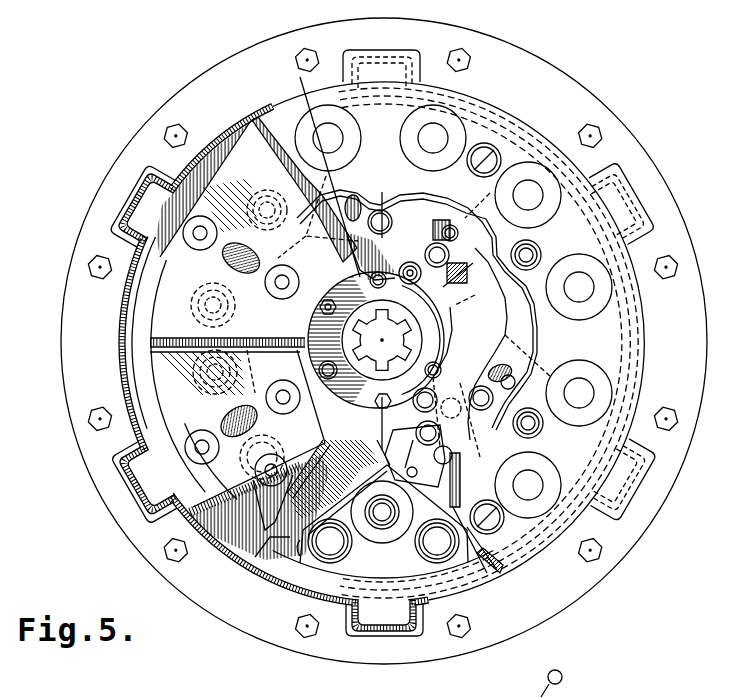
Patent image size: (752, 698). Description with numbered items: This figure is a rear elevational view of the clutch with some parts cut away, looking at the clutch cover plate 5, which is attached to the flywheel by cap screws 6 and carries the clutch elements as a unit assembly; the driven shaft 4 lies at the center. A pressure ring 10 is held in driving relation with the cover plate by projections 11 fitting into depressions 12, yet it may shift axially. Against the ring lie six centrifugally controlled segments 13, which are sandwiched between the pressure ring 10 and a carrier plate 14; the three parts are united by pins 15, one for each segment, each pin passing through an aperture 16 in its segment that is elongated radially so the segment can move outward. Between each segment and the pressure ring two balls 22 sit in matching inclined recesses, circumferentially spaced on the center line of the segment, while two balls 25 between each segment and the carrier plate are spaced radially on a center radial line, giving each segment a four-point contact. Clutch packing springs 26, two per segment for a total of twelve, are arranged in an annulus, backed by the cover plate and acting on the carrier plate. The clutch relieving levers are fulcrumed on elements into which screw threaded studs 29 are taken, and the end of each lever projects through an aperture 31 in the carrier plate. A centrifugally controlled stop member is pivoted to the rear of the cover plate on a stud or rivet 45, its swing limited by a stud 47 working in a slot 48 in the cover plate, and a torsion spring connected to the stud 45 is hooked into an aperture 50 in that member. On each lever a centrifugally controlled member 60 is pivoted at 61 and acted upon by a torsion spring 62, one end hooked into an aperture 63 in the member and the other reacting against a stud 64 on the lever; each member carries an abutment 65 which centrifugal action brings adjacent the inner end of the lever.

The driven shaft 4 is at (380, 360).
The clutch cover plate 5 is at (499, 100).
The cap screws 6 is at (670, 266).
The pressure ring 10 is at (140, 297).
The projections 11 is at (150, 200).
The depressions 12 is at (150, 182).
The segments 13 is at (240, 170).
The carrier plate 14 is at (297, 557).
The pins 15 is at (225, 420).
The aperture 16 is at (233, 274).
The ball 22 is at (255, 557).
The balls 25 is at (197, 447).
The clutch packing springs 26 is at (320, 560).
The screw threaded stud 29 is at (493, 150).
The aperture in the carrier plate 31 is at (503, 580).
The stud or rivet 45 is at (380, 336).
The stud 47 is at (356, 208).
The slot 48 is at (556, 337).
The aperture 50 is at (486, 432).
The centrifugally controlled member 60 is at (390, 437).
The pivot 61 is at (443, 300).
The torsion spring 62 is at (470, 296).
The aperture 63 is at (486, 240).
The stud 64 is at (458, 226).
The abutment or stud device 65 is at (409, 276).